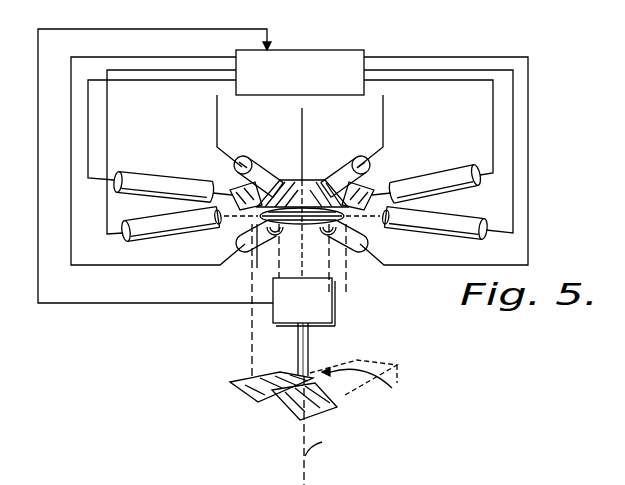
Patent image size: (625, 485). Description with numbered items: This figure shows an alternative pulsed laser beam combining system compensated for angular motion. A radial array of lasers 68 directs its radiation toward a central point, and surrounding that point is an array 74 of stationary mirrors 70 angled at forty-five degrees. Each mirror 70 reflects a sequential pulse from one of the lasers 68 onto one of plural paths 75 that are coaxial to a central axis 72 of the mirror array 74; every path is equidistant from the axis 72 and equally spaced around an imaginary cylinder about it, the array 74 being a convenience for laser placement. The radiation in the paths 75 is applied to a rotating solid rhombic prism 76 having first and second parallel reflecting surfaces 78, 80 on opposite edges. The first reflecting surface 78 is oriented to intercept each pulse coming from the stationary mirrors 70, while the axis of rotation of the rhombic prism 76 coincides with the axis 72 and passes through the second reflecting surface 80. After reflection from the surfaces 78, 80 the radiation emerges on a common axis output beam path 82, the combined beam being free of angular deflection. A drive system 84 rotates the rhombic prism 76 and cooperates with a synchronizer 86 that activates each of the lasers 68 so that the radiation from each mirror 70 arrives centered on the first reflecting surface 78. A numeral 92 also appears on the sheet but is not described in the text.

The lasers 68 is at (165, 222).
The stationary mirrors 70 is at (240, 188).
The central axis 72 is at (300, 122).
The array of stationary mirrors 74 is at (308, 172).
The plural paths 75 is at (329, 266).
The rotating solid rhombic prism 76 is at (285, 421).
The first reflecting surface 78 is at (246, 392).
The second reflecting surface 80 is at (372, 394).
The common axis output beam path 82 is at (307, 475).
The drive system 84 is at (334, 317).
The synchronizer 86 is at (324, 50).
The element 92 is at (540, 476).